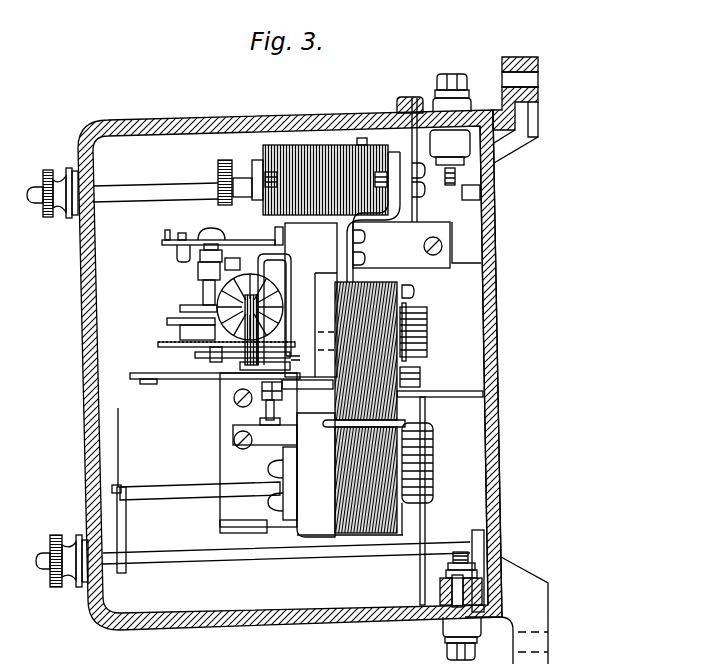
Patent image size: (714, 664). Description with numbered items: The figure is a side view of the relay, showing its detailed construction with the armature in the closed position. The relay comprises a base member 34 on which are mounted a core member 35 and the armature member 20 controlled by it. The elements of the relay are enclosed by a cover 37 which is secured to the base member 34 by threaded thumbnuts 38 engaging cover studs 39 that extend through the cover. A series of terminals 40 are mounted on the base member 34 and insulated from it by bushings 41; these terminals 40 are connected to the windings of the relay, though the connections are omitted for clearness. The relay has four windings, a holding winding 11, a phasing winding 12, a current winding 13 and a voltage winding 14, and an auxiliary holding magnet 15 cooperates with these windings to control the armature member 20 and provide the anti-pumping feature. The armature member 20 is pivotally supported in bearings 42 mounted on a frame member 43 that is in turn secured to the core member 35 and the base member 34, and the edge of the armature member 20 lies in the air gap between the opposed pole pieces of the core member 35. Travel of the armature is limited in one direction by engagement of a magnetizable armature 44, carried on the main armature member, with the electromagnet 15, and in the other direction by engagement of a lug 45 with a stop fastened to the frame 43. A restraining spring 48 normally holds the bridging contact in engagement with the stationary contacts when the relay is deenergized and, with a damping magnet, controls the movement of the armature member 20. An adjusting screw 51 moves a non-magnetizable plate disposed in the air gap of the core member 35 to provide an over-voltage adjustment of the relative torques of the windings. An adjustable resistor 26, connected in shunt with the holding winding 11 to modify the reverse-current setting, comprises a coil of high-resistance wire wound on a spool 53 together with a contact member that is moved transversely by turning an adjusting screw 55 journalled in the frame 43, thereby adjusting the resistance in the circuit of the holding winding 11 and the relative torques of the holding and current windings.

The holding winding 11 is at (423, 329).
The phasing winding 12 is at (404, 332).
The current winding 13 is at (410, 377).
The voltage winding 14 is at (433, 461).
The auxiliary holding magnet 15 is at (273, 283).
The armature member 20 is at (189, 380).
The adjustable resistor 26 is at (310, 143).
The base member 34 is at (498, 384).
The core member 35 is at (377, 530).
The cover 37 is at (152, 127).
The thumbnuts 38 is at (48, 213).
The cover studs 39 is at (135, 188).
The terminals 40 is at (453, 74).
The bushings 41 is at (470, 97).
The bearings 42 is at (262, 445).
The frame member 43 is at (317, 525).
The magnetizable armature 44 is at (243, 363).
The lug 45 is at (146, 384).
The spring 48 is at (190, 303).
The adjusting screw 51 is at (283, 391).
The spool 53 is at (262, 161).
The adjusting screw 55 is at (218, 165).